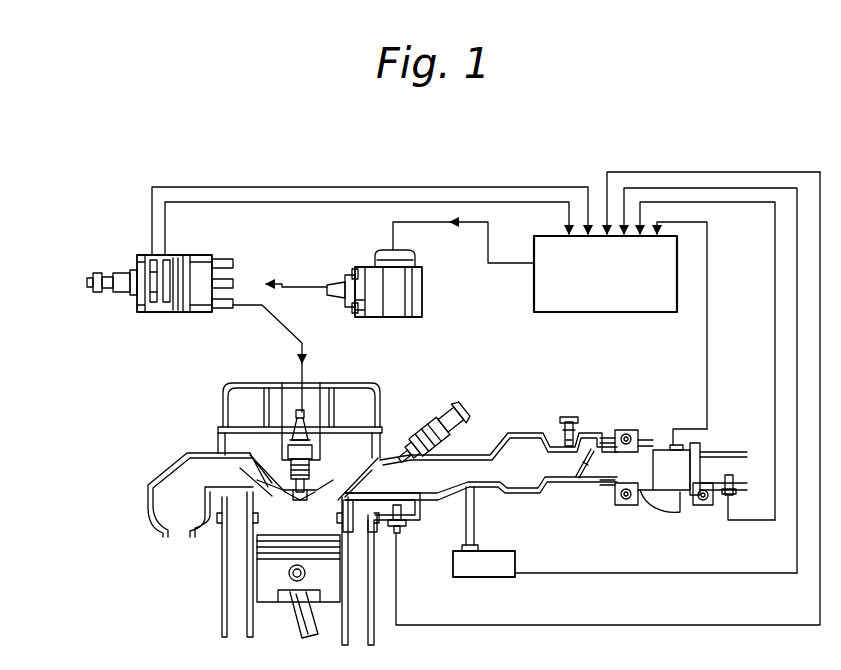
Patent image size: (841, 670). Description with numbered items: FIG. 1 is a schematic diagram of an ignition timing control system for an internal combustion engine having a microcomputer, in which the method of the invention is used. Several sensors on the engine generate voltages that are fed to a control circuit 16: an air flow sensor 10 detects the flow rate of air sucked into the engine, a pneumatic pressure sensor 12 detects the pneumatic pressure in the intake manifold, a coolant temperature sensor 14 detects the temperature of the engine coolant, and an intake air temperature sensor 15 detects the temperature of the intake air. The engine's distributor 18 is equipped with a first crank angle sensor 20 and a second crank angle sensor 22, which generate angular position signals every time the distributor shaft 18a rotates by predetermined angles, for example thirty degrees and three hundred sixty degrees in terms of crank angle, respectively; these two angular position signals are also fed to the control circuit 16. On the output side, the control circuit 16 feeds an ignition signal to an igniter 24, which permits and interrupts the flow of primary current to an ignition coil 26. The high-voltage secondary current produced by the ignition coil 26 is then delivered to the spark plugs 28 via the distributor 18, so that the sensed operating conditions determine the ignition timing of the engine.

The air flow sensor 10 is at (667, 444).
The pneumatic pressure sensor 12 is at (485, 577).
The coolant temperature sensor 14 is at (401, 532).
The intake air temperature sensor 15 is at (727, 497).
The control circuit 16 is at (652, 313).
The distributor 18 is at (205, 258).
The distributor shaft 18a is at (93, 293).
The first crank angle sensor 20 is at (150, 254).
The second crank angle sensor 22 is at (175, 255).
The igniter 24 is at (416, 256).
The ignition coil 26 is at (360, 267).
The spark plugs 28 is at (312, 430).